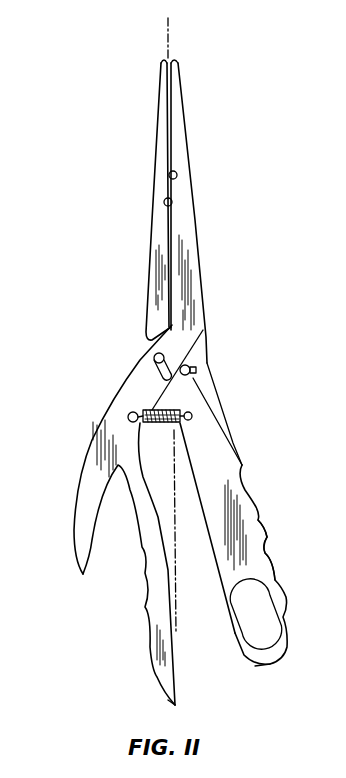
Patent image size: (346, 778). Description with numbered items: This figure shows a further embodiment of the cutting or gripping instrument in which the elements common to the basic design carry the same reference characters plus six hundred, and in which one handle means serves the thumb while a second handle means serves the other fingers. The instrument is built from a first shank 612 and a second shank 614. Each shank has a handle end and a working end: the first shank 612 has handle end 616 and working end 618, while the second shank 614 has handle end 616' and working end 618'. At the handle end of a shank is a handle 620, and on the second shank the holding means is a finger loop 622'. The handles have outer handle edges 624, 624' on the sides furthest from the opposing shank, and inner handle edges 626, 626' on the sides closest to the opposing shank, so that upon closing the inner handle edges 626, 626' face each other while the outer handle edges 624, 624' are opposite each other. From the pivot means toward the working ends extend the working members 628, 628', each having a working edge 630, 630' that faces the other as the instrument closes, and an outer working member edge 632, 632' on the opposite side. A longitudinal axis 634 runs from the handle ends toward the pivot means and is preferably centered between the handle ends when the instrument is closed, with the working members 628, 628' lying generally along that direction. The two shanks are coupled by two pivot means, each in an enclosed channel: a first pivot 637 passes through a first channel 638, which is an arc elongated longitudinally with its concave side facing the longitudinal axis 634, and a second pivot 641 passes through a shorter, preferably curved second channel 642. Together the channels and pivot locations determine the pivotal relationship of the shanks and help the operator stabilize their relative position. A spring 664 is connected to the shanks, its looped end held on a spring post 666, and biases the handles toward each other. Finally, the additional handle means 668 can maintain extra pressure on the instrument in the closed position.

The first shank 612 is at (80, 468).
The second shank 614 is at (252, 498).
The handle end 616 is at (193, 694).
The handle end 616' is at (282, 676).
The working end 618 is at (197, 48).
The working end 618' is at (136, 47).
The handle 620 is at (257, 567).
The finger loop 622' is at (256, 614).
The outer handle edge 624 is at (95, 585).
The outer handle edge 624' is at (283, 528).
The inner handle edge 626 is at (172, 564).
The inner handle edge 626' is at (207, 528).
The working member 628 is at (199, 213).
The working member 628' is at (133, 201).
The working edge 630 is at (199, 193).
The working edge 630' is at (133, 183).
The outer working member edge 632 is at (207, 275).
The outer working member edge 632' is at (130, 263).
The longitudinal axis 634 is at (175, 473).
The first pivot 637 is at (154, 361).
The first channel 638 is at (161, 372).
The second pivot 641 is at (185, 365).
The second channel 642 is at (197, 369).
The spring 664 is at (165, 408).
The spring post 666 is at (193, 421).
The handle means 668 is at (162, 598).